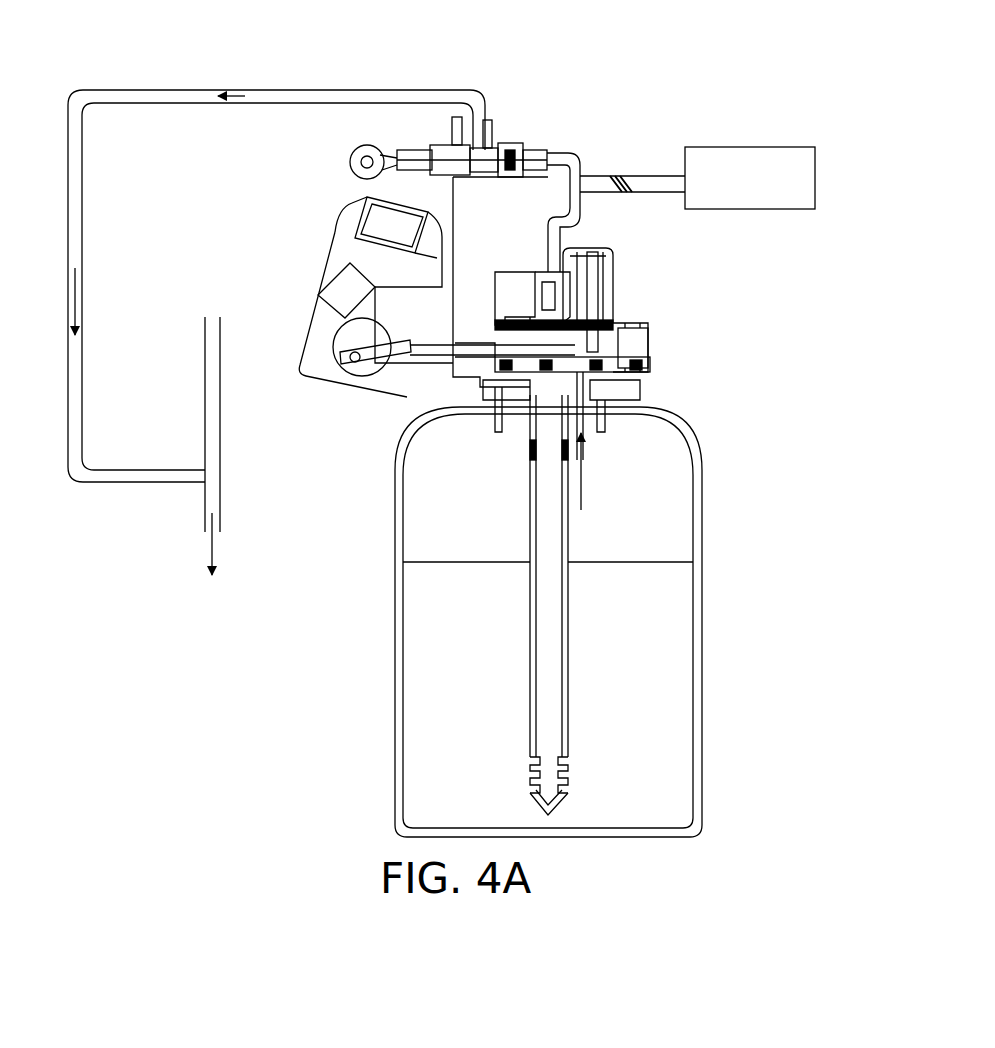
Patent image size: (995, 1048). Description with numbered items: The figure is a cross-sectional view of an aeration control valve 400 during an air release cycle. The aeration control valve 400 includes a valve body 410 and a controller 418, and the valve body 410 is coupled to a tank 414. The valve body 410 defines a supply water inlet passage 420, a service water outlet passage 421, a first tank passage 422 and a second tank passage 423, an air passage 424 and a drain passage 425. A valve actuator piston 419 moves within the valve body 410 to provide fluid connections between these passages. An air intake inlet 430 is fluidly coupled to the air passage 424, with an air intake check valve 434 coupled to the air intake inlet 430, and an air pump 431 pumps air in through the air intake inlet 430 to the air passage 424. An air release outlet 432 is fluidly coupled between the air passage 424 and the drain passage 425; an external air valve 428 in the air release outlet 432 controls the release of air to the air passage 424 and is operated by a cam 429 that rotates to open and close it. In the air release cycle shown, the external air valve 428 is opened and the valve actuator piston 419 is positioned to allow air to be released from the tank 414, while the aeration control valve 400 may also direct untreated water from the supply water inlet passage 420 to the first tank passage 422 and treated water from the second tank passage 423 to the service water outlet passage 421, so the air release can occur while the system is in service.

The aeration control valve 400 is at (690, 76).
The valve body 410 is at (612, 276).
The tank 414 is at (395, 541).
The controller 418 is at (327, 281).
The valve actuator piston 419 is at (463, 367).
The supply water inlet passage 420 is at (645, 331).
The service water outlet passage 421 is at (513, 283).
The first tank passage 422 is at (587, 425).
The second tank passage 423 is at (542, 607).
The air passage 424 is at (555, 283).
The drain passage 425 is at (208, 503).
The external air valve 428 is at (504, 134).
The cam 429 is at (357, 178).
The air intake inlet 430 is at (665, 177).
The air pump 431 is at (768, 147).
The air release outlet 432 is at (305, 104).
The air intake check valve 434 is at (619, 177).